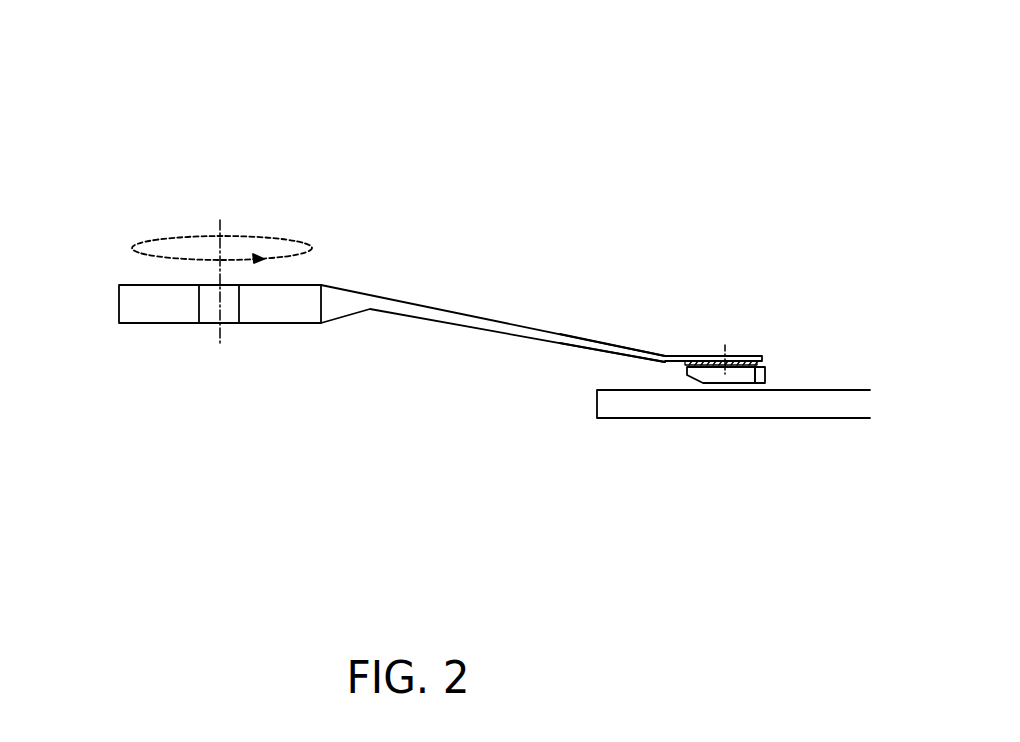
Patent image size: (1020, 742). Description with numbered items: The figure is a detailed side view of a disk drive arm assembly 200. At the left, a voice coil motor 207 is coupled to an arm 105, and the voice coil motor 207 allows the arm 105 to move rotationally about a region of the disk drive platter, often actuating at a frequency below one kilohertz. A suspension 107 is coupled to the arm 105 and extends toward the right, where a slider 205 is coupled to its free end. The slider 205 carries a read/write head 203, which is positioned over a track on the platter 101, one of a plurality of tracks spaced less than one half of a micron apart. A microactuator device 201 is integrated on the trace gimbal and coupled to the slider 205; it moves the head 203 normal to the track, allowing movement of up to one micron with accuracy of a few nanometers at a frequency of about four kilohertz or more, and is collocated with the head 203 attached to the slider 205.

The disk drive arm assembly 200 is at (746, 127).
The voice coil motor 207 is at (131, 315).
The arm 105 is at (407, 300).
The suspension 107 is at (602, 345).
The microactuator device 201 is at (738, 355).
The slider 205 is at (716, 378).
The read/write head 203 is at (766, 377).
The platter 101 is at (612, 402).